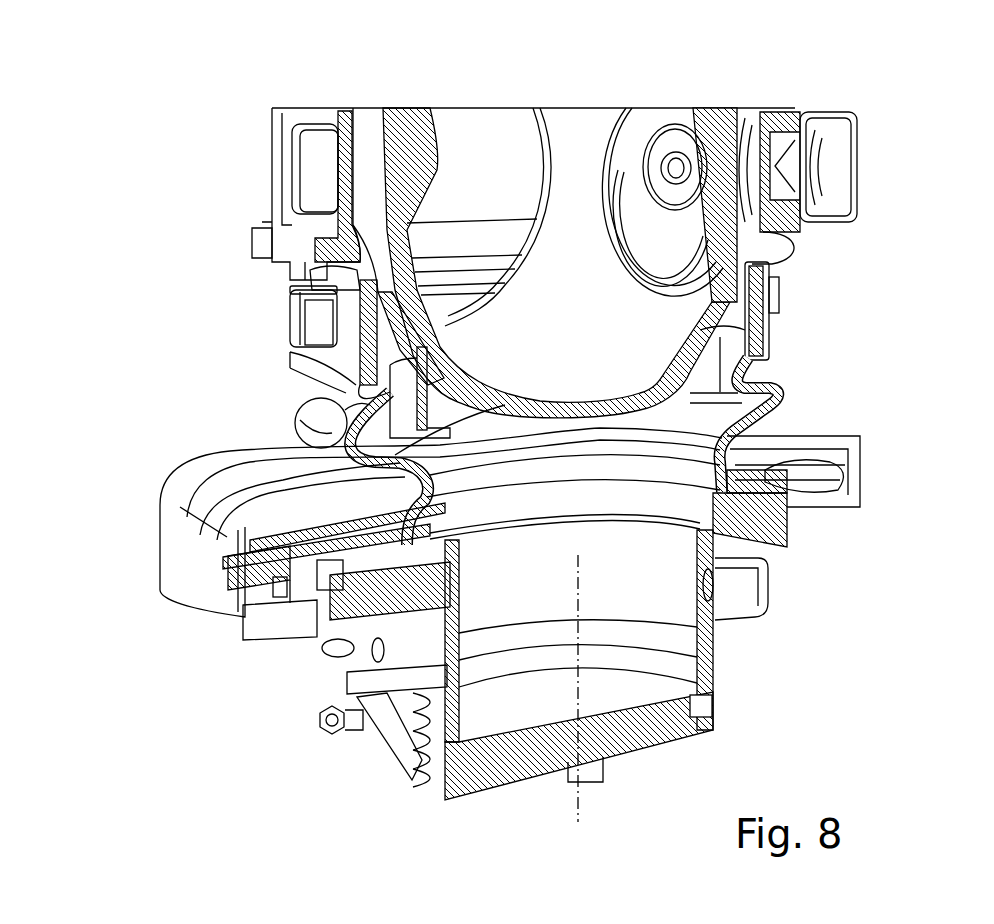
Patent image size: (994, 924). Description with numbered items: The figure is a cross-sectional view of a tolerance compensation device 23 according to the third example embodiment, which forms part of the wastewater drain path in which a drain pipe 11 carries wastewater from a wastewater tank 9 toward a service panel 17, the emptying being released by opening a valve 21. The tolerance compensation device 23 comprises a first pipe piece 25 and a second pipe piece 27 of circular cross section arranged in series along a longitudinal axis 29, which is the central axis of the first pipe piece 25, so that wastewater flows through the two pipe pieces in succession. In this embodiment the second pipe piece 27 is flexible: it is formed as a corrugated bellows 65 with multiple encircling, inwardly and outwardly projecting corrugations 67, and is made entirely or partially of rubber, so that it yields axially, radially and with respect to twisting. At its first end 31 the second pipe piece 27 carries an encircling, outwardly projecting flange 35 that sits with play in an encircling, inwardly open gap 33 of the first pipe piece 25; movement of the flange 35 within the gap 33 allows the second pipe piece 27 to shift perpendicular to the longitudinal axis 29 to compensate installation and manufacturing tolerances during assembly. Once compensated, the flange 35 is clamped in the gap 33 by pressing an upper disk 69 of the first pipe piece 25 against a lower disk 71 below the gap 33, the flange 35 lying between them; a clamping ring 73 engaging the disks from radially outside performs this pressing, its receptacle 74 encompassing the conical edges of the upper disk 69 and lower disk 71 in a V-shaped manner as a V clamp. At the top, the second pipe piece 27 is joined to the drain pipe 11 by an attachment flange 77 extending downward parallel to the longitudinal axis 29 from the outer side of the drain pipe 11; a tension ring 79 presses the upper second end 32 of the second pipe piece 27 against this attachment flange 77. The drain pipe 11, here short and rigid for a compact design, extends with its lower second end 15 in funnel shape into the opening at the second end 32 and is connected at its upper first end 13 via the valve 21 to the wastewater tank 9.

The wastewater tank 9 is at (544, 54).
The drain pipe 11 is at (727, 331).
The first end 13 is at (370, 122).
The second end 15 is at (745, 406).
The service panel 17 is at (453, 795).
The valve 21 is at (590, 343).
The tolerance compensation device 23 is at (493, 374).
The first pipe piece 25 is at (245, 642).
The second pipe piece 27 is at (252, 375).
The longitudinal axis 29 is at (578, 812).
The first end 31 is at (758, 548).
The second end 32 is at (290, 292).
The gap 33 is at (218, 545).
The flange 35 is at (265, 478).
The corrugated bellows 65 is at (310, 373).
The corrugations 67 is at (300, 413).
The upper disk 69 is at (186, 517).
The lower disk 71 is at (322, 574).
The clamping ring 73 is at (178, 574).
The receptacle 74 is at (240, 590).
The attachment flange 77 is at (358, 350).
The tension ring 79 is at (300, 318).